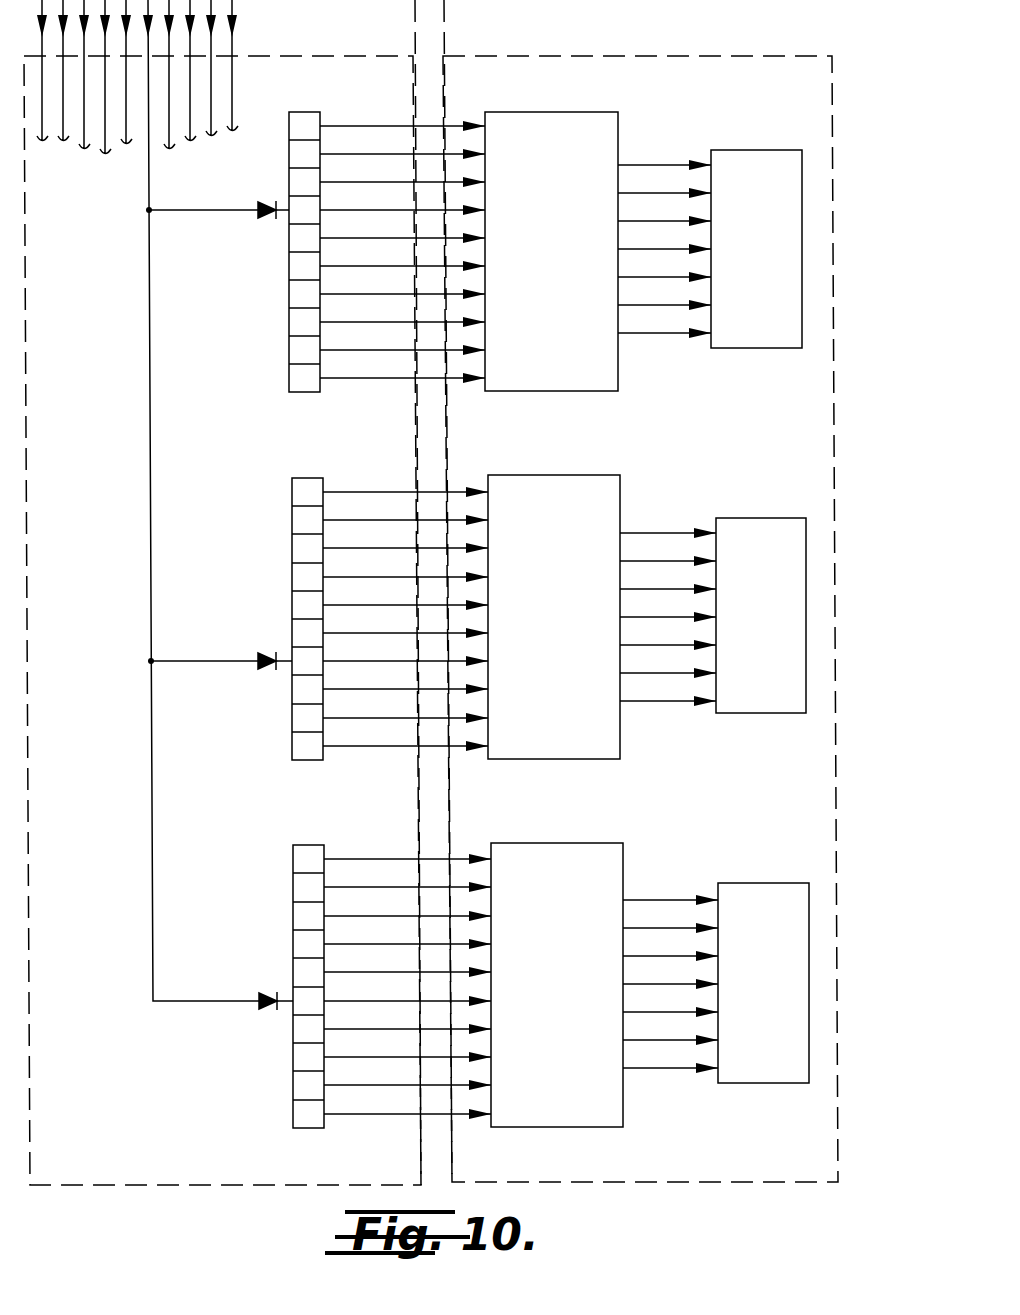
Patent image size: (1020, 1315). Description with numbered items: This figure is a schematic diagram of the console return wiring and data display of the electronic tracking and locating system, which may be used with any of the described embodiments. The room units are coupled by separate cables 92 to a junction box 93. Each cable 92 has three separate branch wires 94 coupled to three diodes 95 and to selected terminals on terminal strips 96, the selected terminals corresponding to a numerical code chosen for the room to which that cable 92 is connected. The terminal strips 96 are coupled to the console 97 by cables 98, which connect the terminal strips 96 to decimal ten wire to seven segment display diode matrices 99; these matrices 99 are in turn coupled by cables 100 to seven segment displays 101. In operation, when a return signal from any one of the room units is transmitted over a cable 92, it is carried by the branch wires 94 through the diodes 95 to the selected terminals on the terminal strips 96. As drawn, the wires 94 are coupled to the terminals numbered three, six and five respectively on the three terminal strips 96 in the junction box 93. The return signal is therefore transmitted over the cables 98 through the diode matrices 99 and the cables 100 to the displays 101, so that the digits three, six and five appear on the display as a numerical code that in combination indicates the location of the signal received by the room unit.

The cables 92 is at (236, 35).
The junction box 93 is at (338, 52).
The branch wires 94 is at (202, 211).
The diodes 95 is at (264, 196).
The terminal strips 96 is at (331, 111).
The console 97 is at (547, 54).
The cables 98 is at (433, 120).
The decimal 10 wire to seven segment display diode matrices 99 is at (537, 110).
The cables 100 is at (665, 336).
The seven segment displays 101 is at (766, 148).